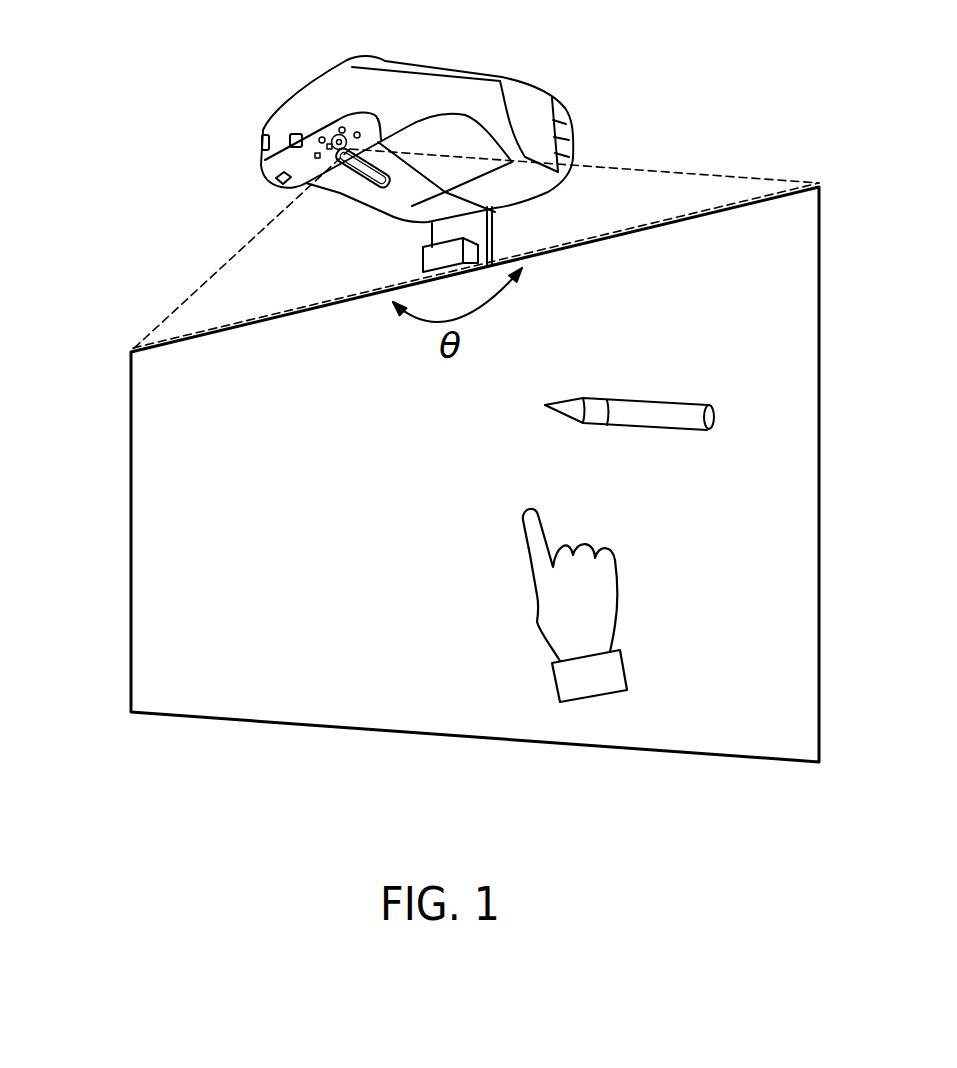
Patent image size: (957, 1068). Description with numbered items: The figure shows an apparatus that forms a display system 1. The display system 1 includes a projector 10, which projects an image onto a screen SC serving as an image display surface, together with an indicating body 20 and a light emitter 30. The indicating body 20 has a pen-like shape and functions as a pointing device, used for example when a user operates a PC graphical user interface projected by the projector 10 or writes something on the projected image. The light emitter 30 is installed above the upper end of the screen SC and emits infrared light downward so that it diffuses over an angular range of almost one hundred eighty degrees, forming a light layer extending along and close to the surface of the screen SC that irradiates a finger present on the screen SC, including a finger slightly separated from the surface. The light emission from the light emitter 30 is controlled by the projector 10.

The display system 1 is at (194, 123).
The projector 10 is at (452, 66).
The indicating body 20 is at (630, 405).
The light emitter 30 is at (424, 256).
The screen SC is at (130, 470).